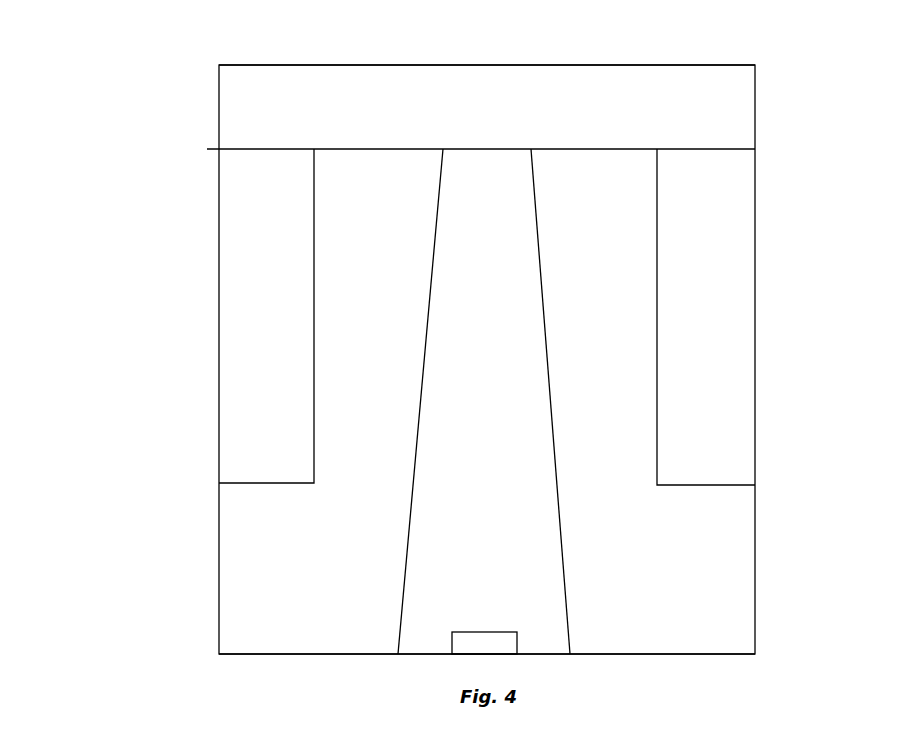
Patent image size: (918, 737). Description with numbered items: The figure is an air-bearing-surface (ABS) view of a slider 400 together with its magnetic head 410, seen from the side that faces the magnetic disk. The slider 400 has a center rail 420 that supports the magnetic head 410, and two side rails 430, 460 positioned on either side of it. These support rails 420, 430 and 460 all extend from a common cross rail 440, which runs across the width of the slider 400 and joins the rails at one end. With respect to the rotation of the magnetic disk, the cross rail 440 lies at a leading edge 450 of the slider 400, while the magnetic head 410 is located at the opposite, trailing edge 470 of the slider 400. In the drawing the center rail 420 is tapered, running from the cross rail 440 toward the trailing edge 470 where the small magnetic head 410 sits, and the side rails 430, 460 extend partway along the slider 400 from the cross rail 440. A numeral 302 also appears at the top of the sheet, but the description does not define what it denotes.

The slider 400 is at (72, 606).
The magnetic head 410 is at (473, 644).
The center rail 420 is at (452, 475).
The side rail 430 is at (262, 285).
The cross rail 440 is at (262, 96).
The leading edge 450 is at (292, 64).
The side rail 460 is at (732, 308).
The trailing edge 470 is at (657, 655).
The upper body 302 is at (746, 4).